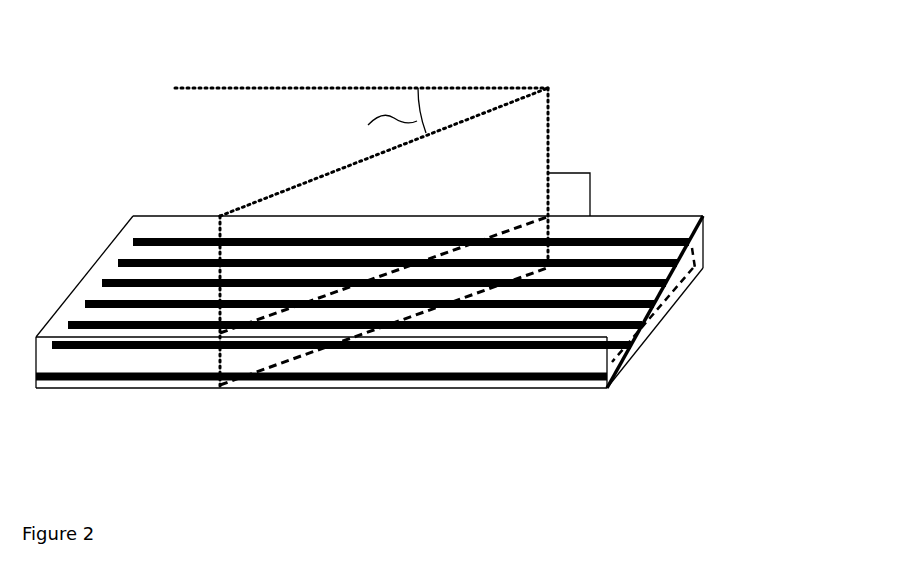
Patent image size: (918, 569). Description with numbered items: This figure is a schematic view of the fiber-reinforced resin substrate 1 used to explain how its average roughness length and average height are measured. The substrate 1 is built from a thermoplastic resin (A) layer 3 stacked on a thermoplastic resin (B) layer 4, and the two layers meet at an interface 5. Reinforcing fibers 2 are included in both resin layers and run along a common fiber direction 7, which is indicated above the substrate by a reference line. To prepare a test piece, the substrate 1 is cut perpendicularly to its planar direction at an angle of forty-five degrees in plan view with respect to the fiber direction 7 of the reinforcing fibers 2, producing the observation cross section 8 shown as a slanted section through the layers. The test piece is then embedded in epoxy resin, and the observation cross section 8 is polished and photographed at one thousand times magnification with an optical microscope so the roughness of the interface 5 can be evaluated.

The fiber-reinforced resin substrate 1 is at (624, 193).
The reinforcing fiber 2 is at (118, 386).
The thermoplastic resin (A) layer 3 is at (672, 228).
The thermoplastic resin (B) layer 4 is at (638, 357).
The interface 5 is at (658, 297).
The fiber direction of reinforcing fiber 7 is at (330, 88).
The observation cross section 8 is at (293, 386).